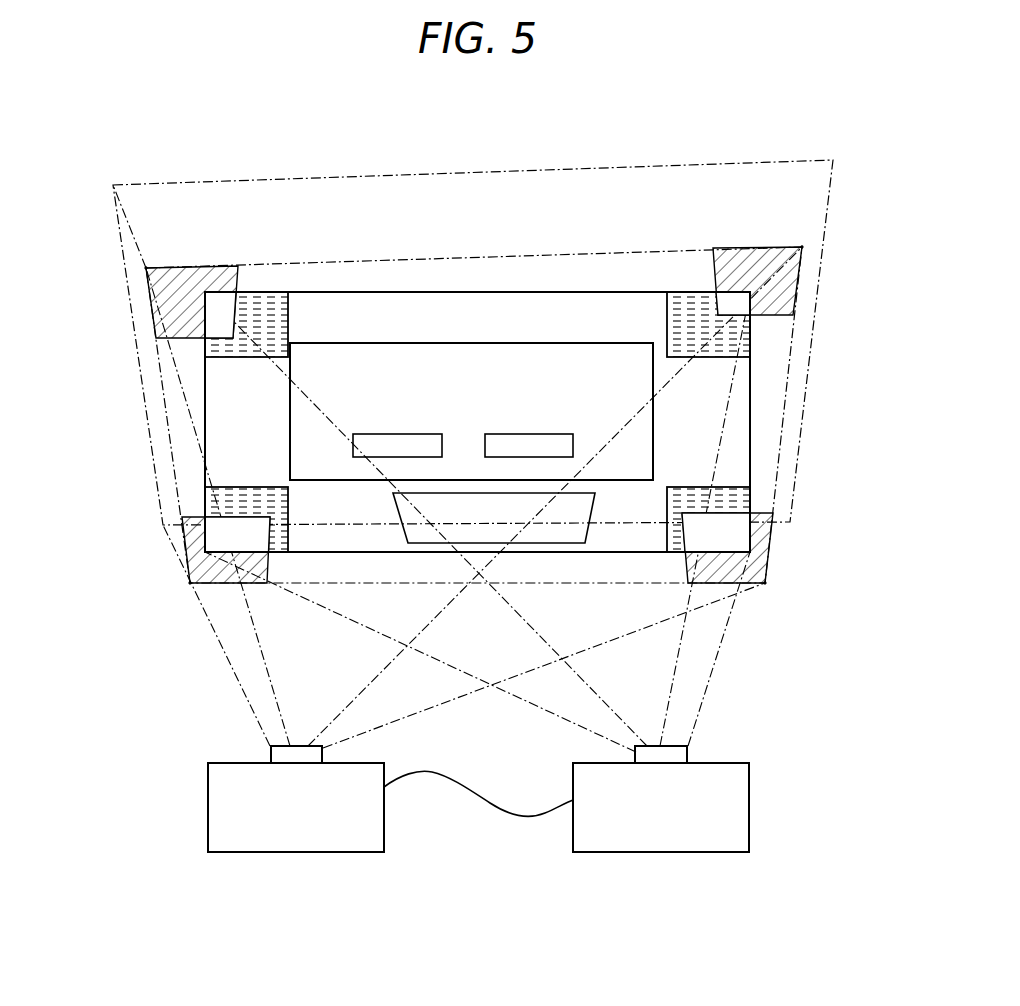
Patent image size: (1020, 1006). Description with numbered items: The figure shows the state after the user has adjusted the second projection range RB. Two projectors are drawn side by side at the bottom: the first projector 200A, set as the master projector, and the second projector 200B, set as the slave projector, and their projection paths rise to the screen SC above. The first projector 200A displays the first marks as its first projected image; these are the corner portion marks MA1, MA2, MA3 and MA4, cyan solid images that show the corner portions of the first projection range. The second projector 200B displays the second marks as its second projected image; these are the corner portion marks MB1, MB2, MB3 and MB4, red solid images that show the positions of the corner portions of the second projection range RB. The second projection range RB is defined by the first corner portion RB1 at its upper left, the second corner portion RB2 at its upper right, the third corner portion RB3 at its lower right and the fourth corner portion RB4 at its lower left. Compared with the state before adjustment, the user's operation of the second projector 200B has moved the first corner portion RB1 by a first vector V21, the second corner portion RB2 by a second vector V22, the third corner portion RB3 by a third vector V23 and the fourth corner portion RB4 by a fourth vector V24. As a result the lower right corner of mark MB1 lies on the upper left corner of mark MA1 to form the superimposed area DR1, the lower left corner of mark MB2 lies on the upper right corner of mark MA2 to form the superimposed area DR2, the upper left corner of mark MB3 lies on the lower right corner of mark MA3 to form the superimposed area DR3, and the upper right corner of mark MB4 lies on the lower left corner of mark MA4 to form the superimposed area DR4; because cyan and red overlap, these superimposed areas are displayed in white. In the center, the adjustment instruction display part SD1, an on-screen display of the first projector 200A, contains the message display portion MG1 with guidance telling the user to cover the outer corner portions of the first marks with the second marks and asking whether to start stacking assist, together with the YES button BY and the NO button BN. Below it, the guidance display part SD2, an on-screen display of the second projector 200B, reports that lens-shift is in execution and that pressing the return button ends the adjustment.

The screen / first projection region RA,P1 SC is at (205, 418).
The second projection range RB is at (782, 426).
The corner portion mark MA1 is at (270, 318).
The corner portion mark MA2 is at (683, 330).
The corner portion mark MA3 is at (740, 499).
The corner portion mark MA4 is at (243, 502).
The corner portion mark MB1 is at (218, 272).
The corner portion mark MB2 is at (740, 258).
The corner portion mark MB3 is at (772, 540).
The corner portion mark MB4 is at (198, 529).
The superimposed area DR1 is at (228, 304).
The superimposed area DR2 is at (723, 305).
The superimposed area DR3 is at (700, 530).
The superimposed area DR4 is at (257, 528).
The message display portion MG1 is at (622, 403).
The YES button BY is at (390, 458).
The NO button BN is at (574, 447).
The adjustment instruction display part SD1 is at (501, 343).
The guidance display part SD2 is at (555, 548).
The first vector V21 is at (134, 234).
The second vector V22 is at (803, 244).
The third vector V23 is at (772, 565).
The fourth vector V24 is at (190, 582).
The first corner portion RB1 is at (148, 268).
The second corner portion RB2 is at (805, 249).
The third corner portion RB3 is at (766, 584).
The fourth corner portion RB4 is at (188, 589).
The second projector 200B is at (208, 802).
The first projector 200A is at (749, 800).